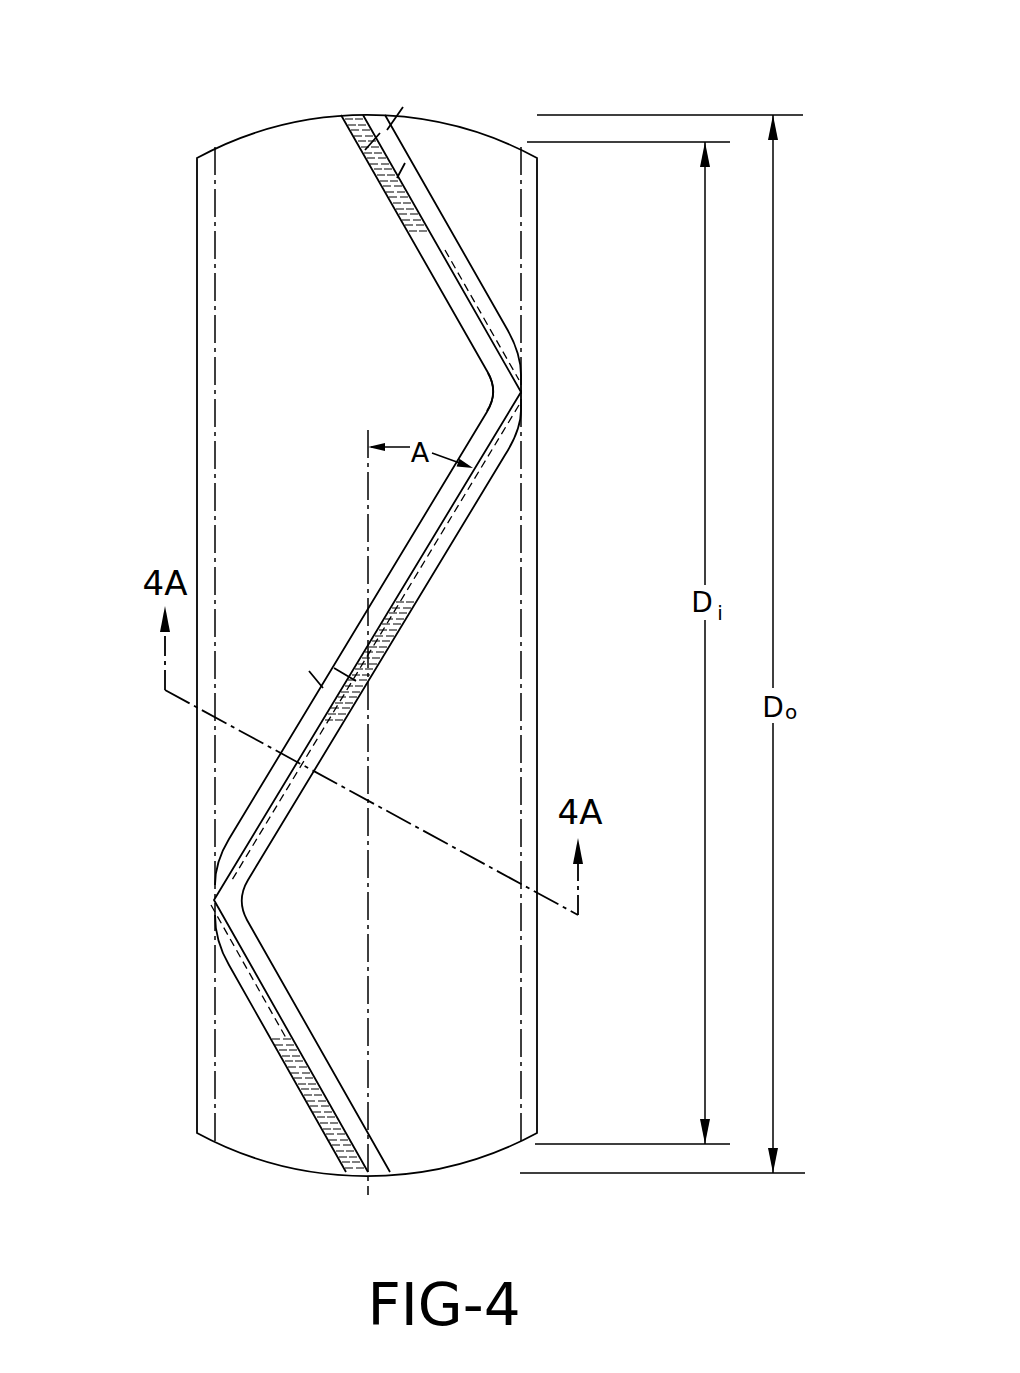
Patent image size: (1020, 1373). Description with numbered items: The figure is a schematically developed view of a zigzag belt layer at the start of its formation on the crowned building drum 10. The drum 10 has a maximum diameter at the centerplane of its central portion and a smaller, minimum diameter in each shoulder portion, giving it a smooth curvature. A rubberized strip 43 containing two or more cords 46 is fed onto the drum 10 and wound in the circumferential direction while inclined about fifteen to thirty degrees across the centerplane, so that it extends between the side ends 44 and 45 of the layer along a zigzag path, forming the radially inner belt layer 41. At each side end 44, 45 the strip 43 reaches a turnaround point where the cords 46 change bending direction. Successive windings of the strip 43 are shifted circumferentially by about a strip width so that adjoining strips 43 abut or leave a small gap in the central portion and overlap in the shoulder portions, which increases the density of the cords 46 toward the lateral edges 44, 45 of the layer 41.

The crowned building drum 10 is at (200, 207).
The radially inner belt layer 41 is at (466, 257).
The rubberized strip 43 is at (333, 667).
The side end of the layer 44 is at (214, 882).
The side end of the layer 45 is at (521, 400).
The cords 46 is at (410, 158).